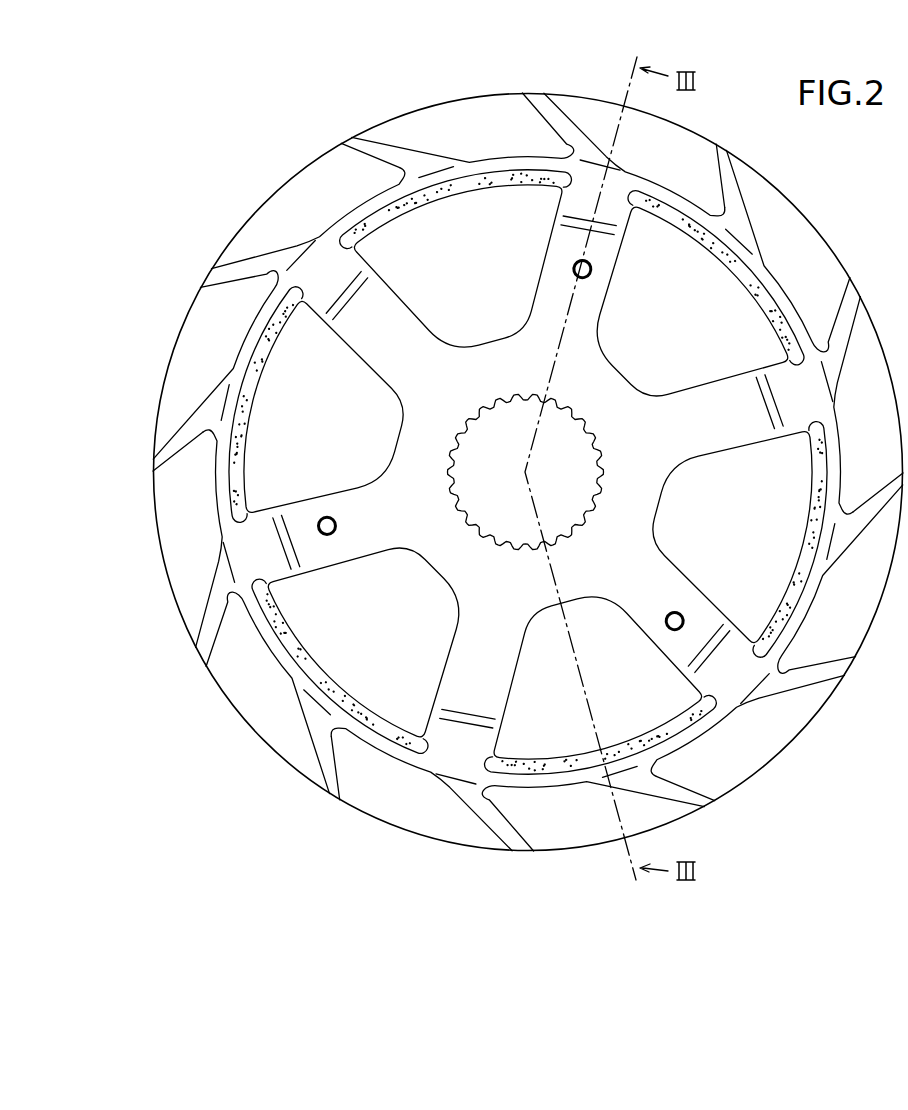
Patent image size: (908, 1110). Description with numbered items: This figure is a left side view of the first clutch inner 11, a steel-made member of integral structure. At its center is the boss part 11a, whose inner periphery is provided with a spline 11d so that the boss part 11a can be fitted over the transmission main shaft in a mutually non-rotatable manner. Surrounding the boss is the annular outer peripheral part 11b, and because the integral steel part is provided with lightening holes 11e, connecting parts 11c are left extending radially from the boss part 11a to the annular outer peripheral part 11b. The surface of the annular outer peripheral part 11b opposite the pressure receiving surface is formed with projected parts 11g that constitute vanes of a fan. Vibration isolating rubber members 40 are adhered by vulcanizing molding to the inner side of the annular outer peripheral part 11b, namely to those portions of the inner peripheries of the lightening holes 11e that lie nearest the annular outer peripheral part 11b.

The first clutch inner 11 is at (141, 106).
The boss part 11a is at (488, 372).
The annular outer peripheral part 11b is at (325, 180).
The connecting parts 11c is at (387, 332).
The spline 11d is at (462, 436).
The lightening holes 11e is at (315, 388).
The projected parts 11g is at (188, 423).
The vibration isolating rubber members 40 is at (300, 652).